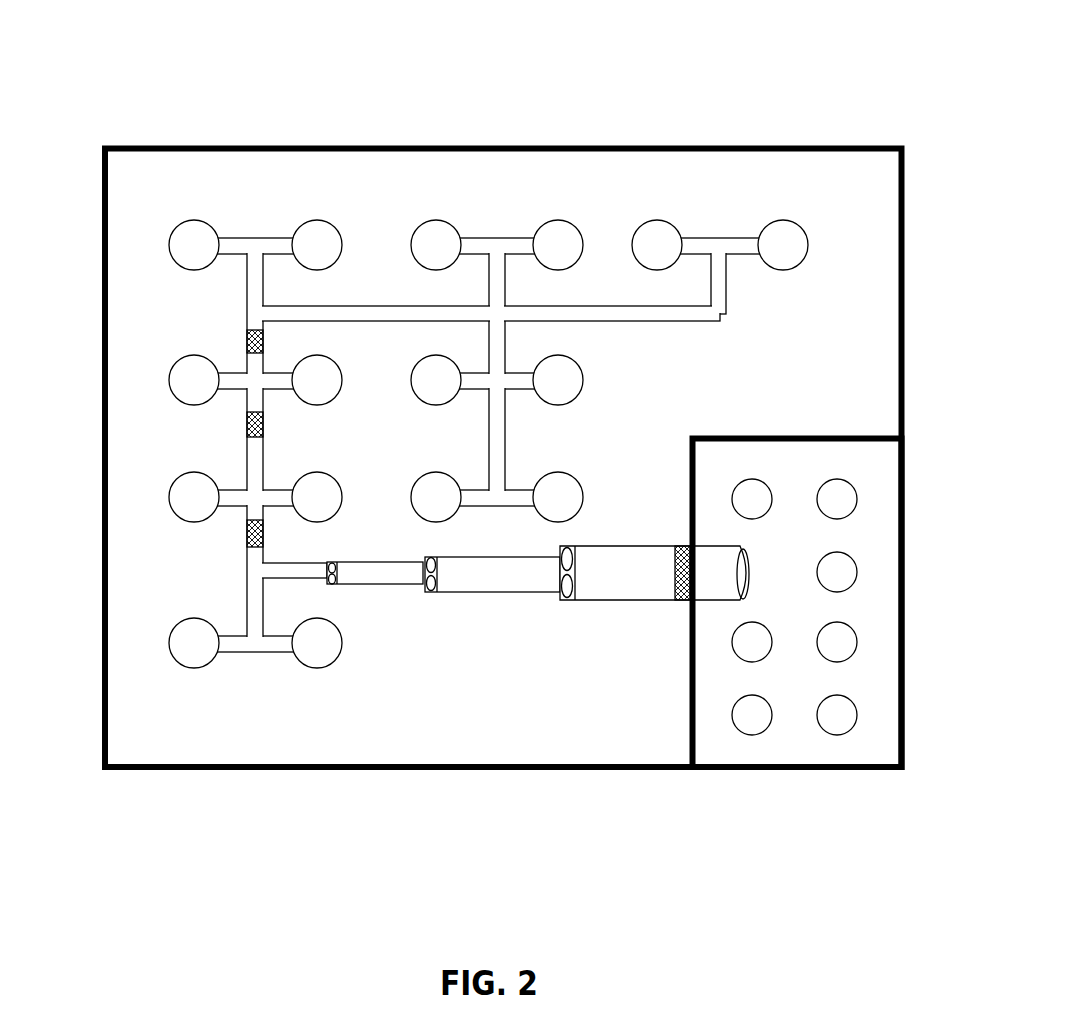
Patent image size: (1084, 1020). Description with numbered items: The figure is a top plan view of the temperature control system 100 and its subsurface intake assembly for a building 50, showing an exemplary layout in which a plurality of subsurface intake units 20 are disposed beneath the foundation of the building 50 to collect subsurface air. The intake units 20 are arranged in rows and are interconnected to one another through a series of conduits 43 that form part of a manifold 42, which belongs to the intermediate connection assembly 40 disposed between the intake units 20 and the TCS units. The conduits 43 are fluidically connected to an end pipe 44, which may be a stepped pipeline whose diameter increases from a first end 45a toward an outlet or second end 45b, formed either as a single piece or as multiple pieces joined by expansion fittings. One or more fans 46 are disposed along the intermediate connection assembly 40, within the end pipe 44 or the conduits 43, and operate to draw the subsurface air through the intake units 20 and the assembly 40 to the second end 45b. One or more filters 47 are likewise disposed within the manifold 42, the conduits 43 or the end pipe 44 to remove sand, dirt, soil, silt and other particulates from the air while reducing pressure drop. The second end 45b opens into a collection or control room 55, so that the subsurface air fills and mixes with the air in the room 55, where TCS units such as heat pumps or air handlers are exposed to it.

The temperature control system 100 is at (501, 385).
The building 50 is at (502, 146).
The subsurface intake units 20 is at (190, 228).
The conduits 43 is at (367, 305).
The filters 47 is at (247, 533).
The intermediate connection assembly 40 is at (634, 549).
The manifold 42 is at (488, 607).
The end pipe 44 is at (608, 600).
The first end 45a is at (307, 579).
The second end 45b is at (712, 547).
The fans 46 is at (570, 600).
The collection room 55 is at (845, 460).